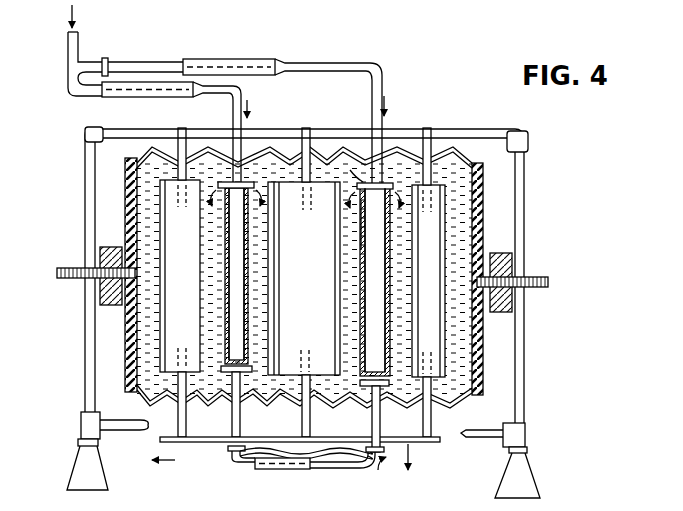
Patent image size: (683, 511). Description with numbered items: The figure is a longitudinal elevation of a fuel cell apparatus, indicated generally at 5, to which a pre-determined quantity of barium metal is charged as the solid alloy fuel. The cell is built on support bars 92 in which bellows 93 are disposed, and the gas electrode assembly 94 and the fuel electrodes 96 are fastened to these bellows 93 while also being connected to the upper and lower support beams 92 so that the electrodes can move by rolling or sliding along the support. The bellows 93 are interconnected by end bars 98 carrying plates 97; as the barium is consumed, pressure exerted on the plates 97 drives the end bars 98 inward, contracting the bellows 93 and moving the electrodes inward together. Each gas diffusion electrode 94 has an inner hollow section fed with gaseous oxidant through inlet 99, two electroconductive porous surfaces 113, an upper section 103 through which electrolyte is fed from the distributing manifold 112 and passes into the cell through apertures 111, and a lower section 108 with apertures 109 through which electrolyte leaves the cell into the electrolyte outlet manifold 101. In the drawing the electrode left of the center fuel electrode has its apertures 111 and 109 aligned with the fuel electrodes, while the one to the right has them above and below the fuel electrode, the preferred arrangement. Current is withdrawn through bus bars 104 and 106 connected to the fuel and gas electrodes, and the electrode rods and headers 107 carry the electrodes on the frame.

The section view direction 5 is at (66, 237).
The support bars 92 is at (480, 135).
The bellows 93 is at (332, 148).
The gas electrode assembly 94 is at (252, 222).
The fuel electrodes 96 is at (190, 268).
The plates 97 is at (113, 306).
The end bars 98 is at (126, 218).
The inlet 99 is at (233, 282).
The electrolyte outlet manifold 101 is at (226, 462).
The upper section 103 is at (248, 101).
The bus bar 104 is at (413, 456).
The bus bar 106 is at (378, 463).
The electrode rod / header 107 is at (178, 132).
The lower section 108 is at (372, 420).
The apertures 109 is at (358, 382).
The apertures 111 is at (344, 175).
The distributing manifold 112 is at (67, 44).
The electroconductive porous surfaces 113 is at (385, 225).